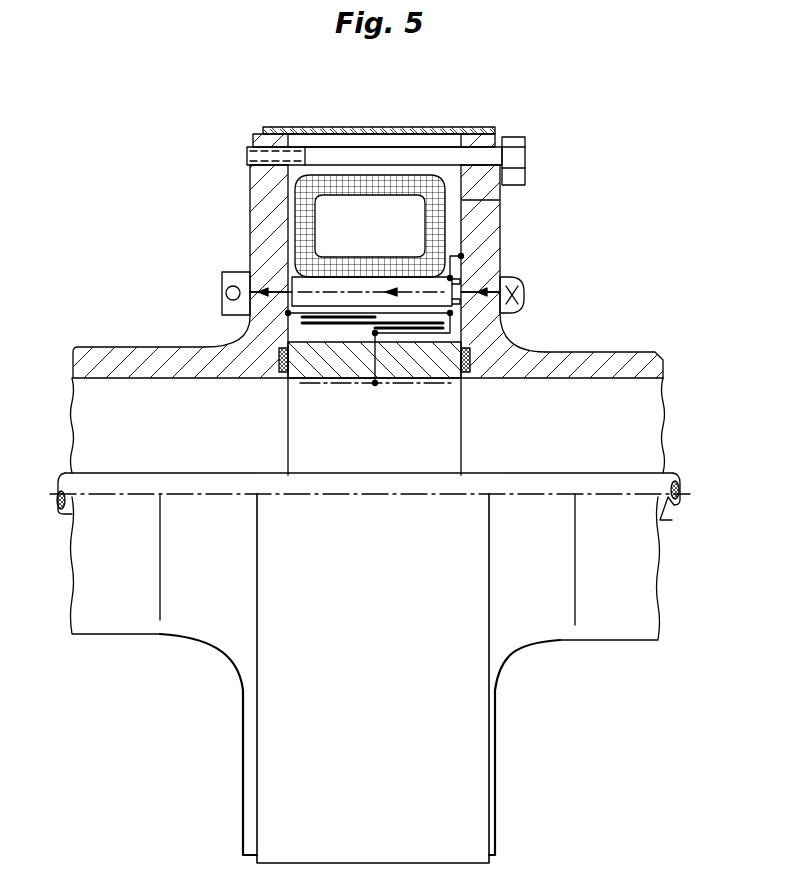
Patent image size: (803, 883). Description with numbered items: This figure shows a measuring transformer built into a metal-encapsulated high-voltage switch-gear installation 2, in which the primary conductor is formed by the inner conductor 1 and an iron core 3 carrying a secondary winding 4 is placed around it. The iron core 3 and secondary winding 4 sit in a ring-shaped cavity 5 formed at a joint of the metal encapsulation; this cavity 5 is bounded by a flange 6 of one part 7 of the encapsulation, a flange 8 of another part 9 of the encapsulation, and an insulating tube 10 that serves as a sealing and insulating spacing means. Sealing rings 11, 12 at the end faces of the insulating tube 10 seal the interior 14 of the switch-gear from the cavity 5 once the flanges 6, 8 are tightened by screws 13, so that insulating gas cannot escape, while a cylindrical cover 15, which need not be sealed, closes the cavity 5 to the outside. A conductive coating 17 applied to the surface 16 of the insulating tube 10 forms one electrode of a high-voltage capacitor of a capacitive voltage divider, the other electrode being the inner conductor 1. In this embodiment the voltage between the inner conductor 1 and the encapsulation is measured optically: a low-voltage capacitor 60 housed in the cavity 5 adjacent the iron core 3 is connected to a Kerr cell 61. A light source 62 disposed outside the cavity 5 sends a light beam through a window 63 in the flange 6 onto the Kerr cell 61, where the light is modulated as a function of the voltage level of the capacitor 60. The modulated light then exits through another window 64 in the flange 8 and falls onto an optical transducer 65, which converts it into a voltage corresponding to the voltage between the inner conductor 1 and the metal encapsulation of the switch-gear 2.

The inner conductor 1 is at (648, 483).
The high-voltage switch-gear installation 2 is at (630, 393).
The iron core 3 is at (341, 212).
The secondary winding 4 is at (418, 190).
The ring-shaped cavity 5 is at (453, 202).
The flange 6 is at (482, 214).
The part of the metal encapsulation 7 is at (605, 363).
The flange 8 is at (267, 195).
The another part of the metal encapsulation 9 is at (101, 362).
The insulating tube 10 is at (443, 347).
The sealing ring 11 is at (478, 358).
The sealing ring 12 is at (278, 357).
The screws 13 is at (387, 157).
The interior of the high-voltage switch-gear 14 is at (650, 420).
The cylindrical cover 15 is at (287, 130).
The surface of the insulating tube 16 is at (455, 383).
The conductive coating 17 is at (313, 383).
The low-voltage capacitor 60 is at (352, 323).
The Kerr cell 61 is at (318, 283).
The light source 62 is at (524, 298).
The window 63 is at (483, 284).
The another window 64 is at (280, 288).
The optical transducer 65 is at (222, 292).